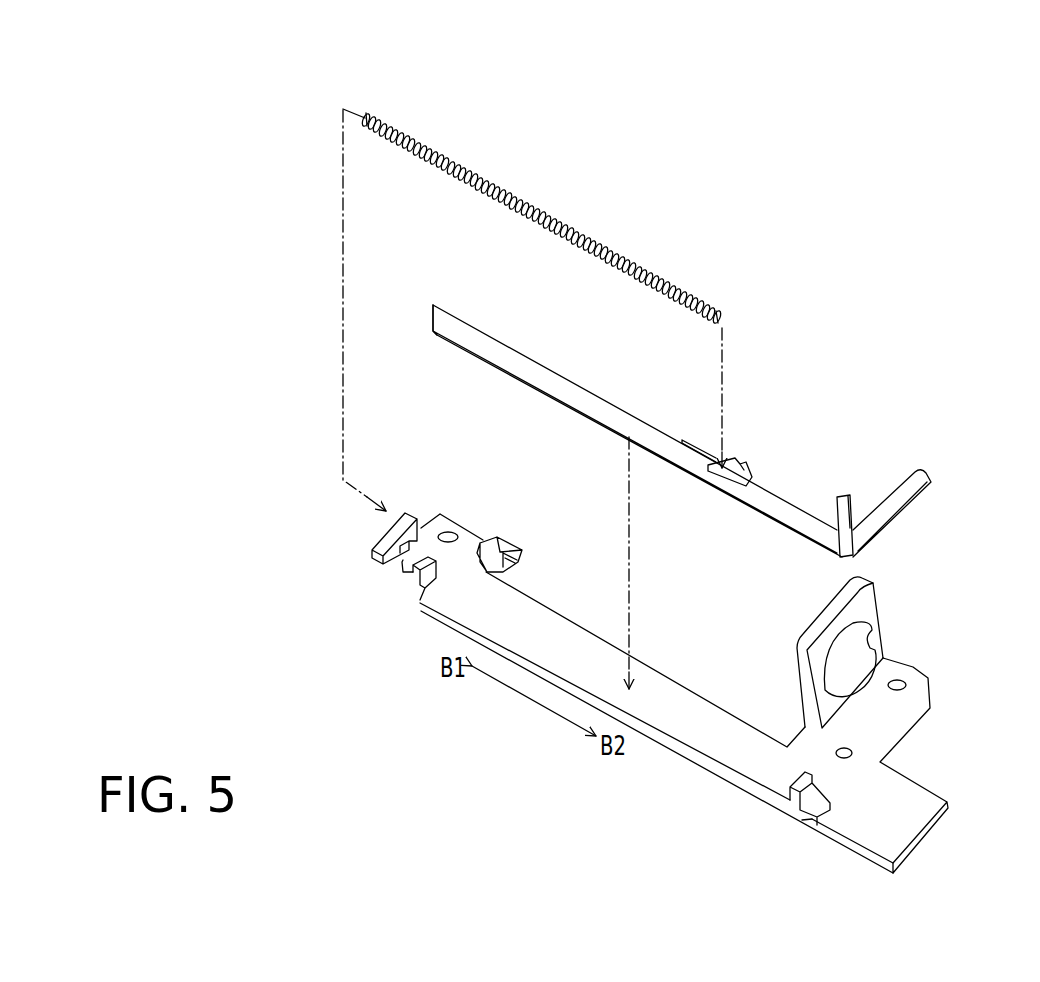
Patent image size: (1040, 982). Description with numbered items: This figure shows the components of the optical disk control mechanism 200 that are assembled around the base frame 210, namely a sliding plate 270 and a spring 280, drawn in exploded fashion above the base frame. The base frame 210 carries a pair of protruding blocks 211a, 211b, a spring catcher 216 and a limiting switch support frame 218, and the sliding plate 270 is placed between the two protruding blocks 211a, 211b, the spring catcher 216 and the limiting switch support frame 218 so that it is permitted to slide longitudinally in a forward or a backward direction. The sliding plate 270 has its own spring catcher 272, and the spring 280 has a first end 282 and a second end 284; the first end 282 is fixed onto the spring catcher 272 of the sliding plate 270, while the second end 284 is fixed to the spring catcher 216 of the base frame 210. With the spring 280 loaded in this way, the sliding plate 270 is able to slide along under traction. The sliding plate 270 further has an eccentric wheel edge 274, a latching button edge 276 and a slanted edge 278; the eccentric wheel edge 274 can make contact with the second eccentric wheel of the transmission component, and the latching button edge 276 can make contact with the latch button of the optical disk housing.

The optical disk control mechanism 200 is at (559, 827).
The base frame 210 is at (862, 838).
The protruding block 211a is at (795, 797).
The protruding block 211b is at (413, 578).
The spring catcher 216 is at (402, 516).
The limiting switch support frame 218 is at (497, 548).
The sliding plate 270 is at (920, 479).
The spring catcher 272 is at (748, 480).
The eccentric wheel edge 274 is at (884, 497).
The latching button edge 276 is at (465, 321).
The slanted edge 278 is at (430, 318).
The spring 280 is at (519, 200).
The first end 282 is at (719, 315).
The second end 284 is at (372, 115).